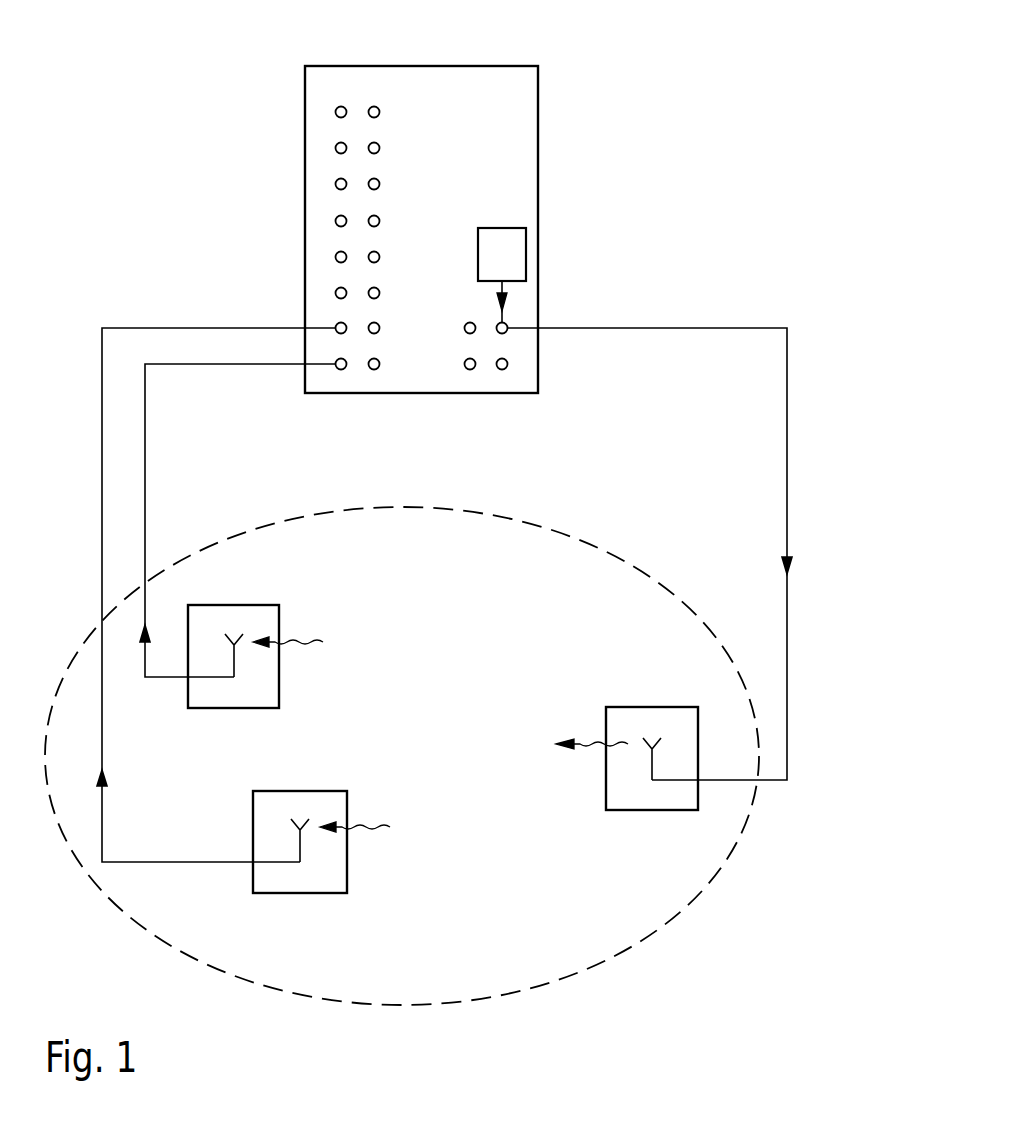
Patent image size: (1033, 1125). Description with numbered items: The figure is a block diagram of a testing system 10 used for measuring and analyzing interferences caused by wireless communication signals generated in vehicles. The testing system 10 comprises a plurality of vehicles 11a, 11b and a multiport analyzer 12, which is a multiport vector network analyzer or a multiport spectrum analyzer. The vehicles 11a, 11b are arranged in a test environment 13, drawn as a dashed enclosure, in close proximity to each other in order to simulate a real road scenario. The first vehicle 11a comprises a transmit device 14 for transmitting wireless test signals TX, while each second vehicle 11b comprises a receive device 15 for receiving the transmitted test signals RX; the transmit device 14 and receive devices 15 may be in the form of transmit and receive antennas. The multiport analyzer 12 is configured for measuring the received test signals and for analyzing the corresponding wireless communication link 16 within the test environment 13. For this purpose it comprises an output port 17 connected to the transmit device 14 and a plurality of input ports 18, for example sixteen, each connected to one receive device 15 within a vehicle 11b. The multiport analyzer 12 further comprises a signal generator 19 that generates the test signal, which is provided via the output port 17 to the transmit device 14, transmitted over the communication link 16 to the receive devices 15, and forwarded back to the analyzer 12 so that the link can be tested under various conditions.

The testing system 10 is at (662, 66).
The first vehicle 11a is at (652, 810).
The second vehicle 11b is at (234, 708).
The multiport analyzer 12 is at (471, 66).
The test environment 13 is at (688, 903).
The transmit device 14 is at (652, 765).
The receive device 15 is at (234, 665).
The communication link 16 is at (444, 744).
The output port 17 is at (511, 374).
The input ports 18 is at (330, 374).
The signal generator 19 is at (526, 243).